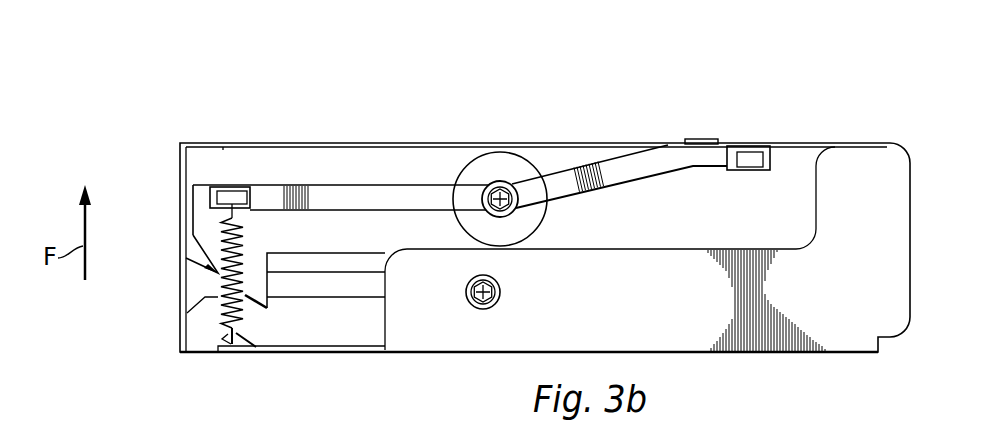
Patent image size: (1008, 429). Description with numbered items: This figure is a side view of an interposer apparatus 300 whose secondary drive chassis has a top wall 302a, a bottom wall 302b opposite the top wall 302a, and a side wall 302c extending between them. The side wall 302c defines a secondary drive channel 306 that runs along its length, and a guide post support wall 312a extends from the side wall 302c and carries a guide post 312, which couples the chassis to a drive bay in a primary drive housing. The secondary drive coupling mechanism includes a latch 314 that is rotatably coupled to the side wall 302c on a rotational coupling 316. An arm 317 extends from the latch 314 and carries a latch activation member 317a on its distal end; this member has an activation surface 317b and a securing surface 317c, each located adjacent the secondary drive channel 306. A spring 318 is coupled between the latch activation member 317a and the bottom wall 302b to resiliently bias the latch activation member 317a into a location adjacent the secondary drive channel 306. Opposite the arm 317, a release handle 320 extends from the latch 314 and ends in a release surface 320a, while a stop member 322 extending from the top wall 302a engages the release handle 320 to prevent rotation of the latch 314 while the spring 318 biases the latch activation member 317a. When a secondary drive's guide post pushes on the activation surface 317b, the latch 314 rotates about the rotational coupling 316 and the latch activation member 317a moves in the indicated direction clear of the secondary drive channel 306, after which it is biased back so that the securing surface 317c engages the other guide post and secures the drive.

The interposer apparatus 300 is at (361, 68).
The top wall 302a is at (427, 143).
The bottom wall 302b is at (364, 353).
The side wall 302c is at (717, 228).
The secondary drive channel 306 is at (370, 297).
The guide post 312 is at (500, 303).
The guide post support wall 312a is at (665, 314).
The latch 314 is at (504, 163).
The rotational coupling 316 is at (519, 196).
The arm 317 is at (333, 196).
The latch activation member 317a is at (207, 228).
The activation surface 317b is at (212, 270).
The securing surface 317c is at (266, 285).
The spring 318 is at (244, 252).
The release handle 320 is at (612, 172).
The release surface 320a is at (750, 148).
The stop member 322 is at (702, 138).